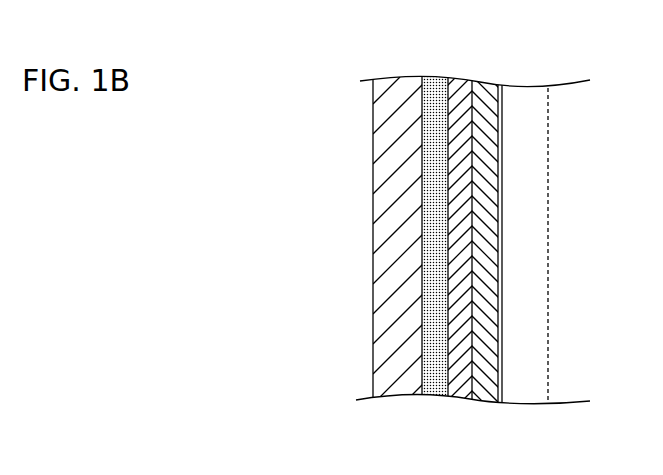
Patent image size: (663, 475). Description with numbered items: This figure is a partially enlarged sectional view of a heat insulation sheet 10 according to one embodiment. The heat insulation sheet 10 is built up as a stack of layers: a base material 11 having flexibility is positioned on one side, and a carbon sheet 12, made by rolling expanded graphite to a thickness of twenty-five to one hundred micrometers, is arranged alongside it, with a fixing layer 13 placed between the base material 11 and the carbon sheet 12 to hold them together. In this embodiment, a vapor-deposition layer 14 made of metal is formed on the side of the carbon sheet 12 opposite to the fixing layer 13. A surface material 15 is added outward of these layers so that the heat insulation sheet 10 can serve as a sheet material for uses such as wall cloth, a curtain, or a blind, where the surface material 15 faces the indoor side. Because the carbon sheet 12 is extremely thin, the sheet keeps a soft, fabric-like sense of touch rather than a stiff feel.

The heat insulation sheet 10 is at (334, 372).
The base material 11 is at (387, 147).
The carbon sheet 12 is at (460, 78).
The fixing layer 13 is at (436, 78).
The vapor-deposition layer 14 is at (485, 392).
The surface material 15 is at (549, 166).